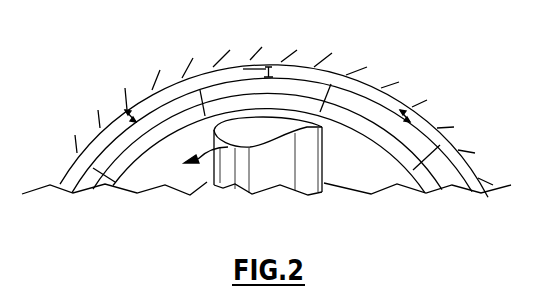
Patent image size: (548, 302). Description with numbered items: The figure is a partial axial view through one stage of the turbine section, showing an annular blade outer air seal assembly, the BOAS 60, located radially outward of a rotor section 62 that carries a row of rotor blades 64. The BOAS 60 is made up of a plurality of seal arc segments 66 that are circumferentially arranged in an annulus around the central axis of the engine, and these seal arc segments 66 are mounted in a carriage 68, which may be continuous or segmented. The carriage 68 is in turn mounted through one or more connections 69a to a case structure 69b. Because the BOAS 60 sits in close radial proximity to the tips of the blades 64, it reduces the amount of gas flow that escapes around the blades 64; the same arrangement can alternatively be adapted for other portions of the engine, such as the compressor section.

The blade outer air seal assembly 60 is at (420, 141).
The rotor section 62 is at (333, 190).
The rotor blades 64 is at (208, 182).
The seal arc segments 66 is at (310, 98).
The carriage 68 is at (288, 78).
The connections 69a is at (246, 69).
The case structure 69b is at (425, 125).